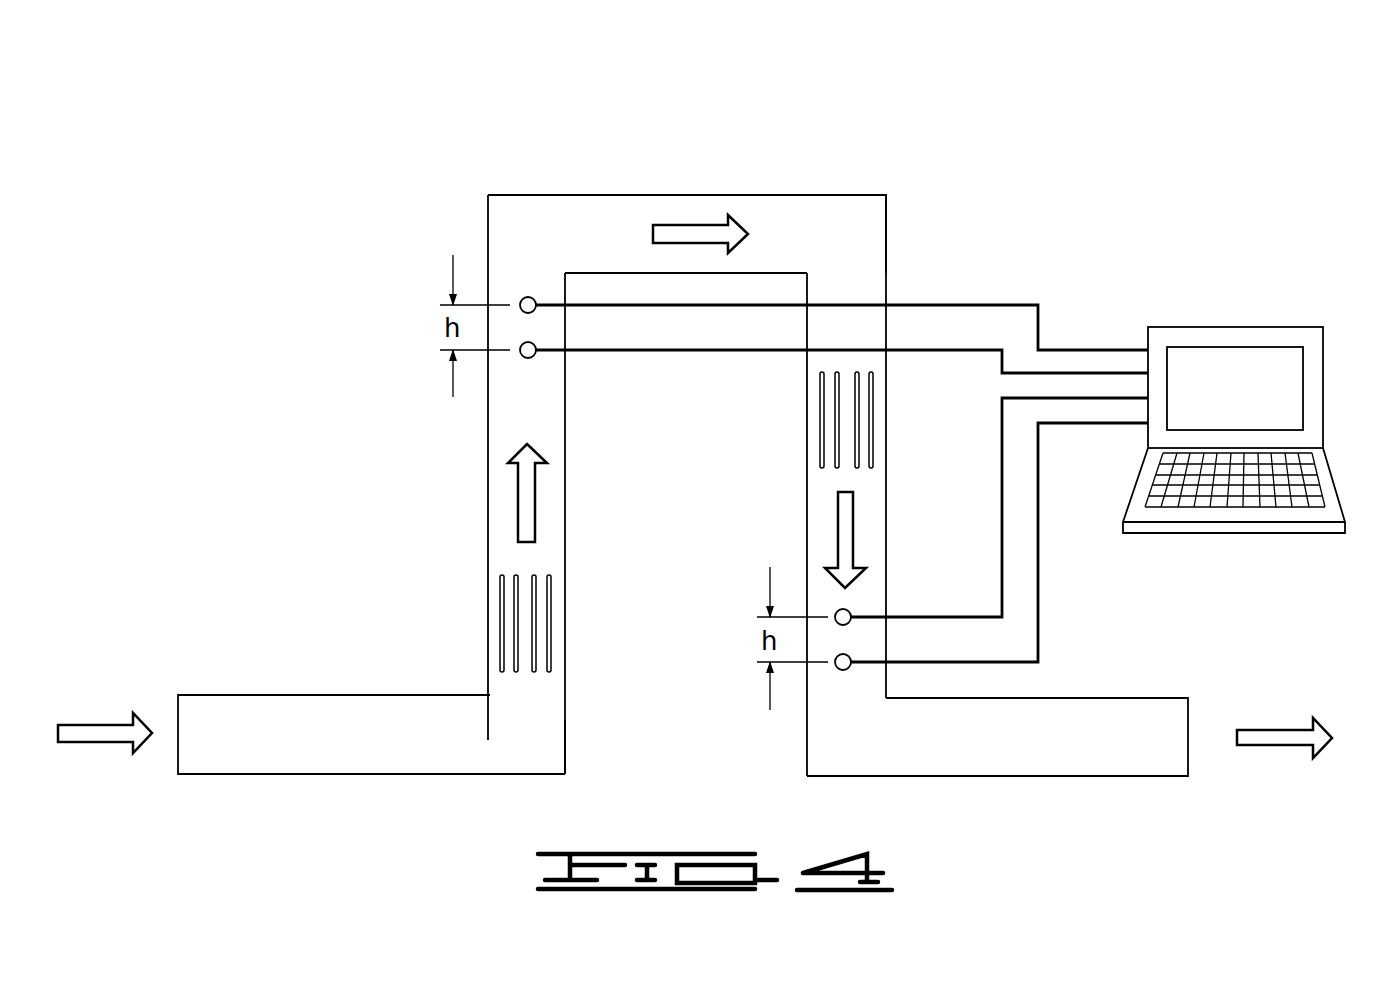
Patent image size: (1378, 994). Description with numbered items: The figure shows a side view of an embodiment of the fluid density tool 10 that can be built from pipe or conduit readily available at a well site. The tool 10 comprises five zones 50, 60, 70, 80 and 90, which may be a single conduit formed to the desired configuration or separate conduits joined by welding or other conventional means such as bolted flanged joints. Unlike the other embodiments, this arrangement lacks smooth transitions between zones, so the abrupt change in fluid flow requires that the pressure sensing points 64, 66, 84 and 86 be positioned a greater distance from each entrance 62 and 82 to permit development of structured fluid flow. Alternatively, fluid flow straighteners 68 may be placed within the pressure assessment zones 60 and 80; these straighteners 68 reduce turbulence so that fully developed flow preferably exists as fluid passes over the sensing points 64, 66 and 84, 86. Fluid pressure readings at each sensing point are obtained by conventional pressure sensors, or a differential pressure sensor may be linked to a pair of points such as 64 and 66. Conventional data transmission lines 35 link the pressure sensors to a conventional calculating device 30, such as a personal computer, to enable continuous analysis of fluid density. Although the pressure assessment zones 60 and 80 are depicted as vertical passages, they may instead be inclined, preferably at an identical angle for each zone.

The fluid density tool 10 is at (892, 125).
The calculating device 30 is at (1297, 327).
The data transmission lines 35 is at (938, 303).
The zone 50 is at (285, 733).
The pressure assessment zone 60 is at (497, 438).
The entrance 62 is at (525, 708).
The pressure sensing point 64 is at (533, 358).
The pressure sensing point 66 is at (527, 297).
The fluid flow straighteners 68 is at (498, 608).
The zone 70 is at (588, 220).
The pressure assessment zone 80 is at (815, 400).
The entrance 82 is at (850, 270).
The pressure sensing point 84 is at (850, 608).
The pressure sensing point 86 is at (842, 672).
The zone 90 is at (1090, 735).